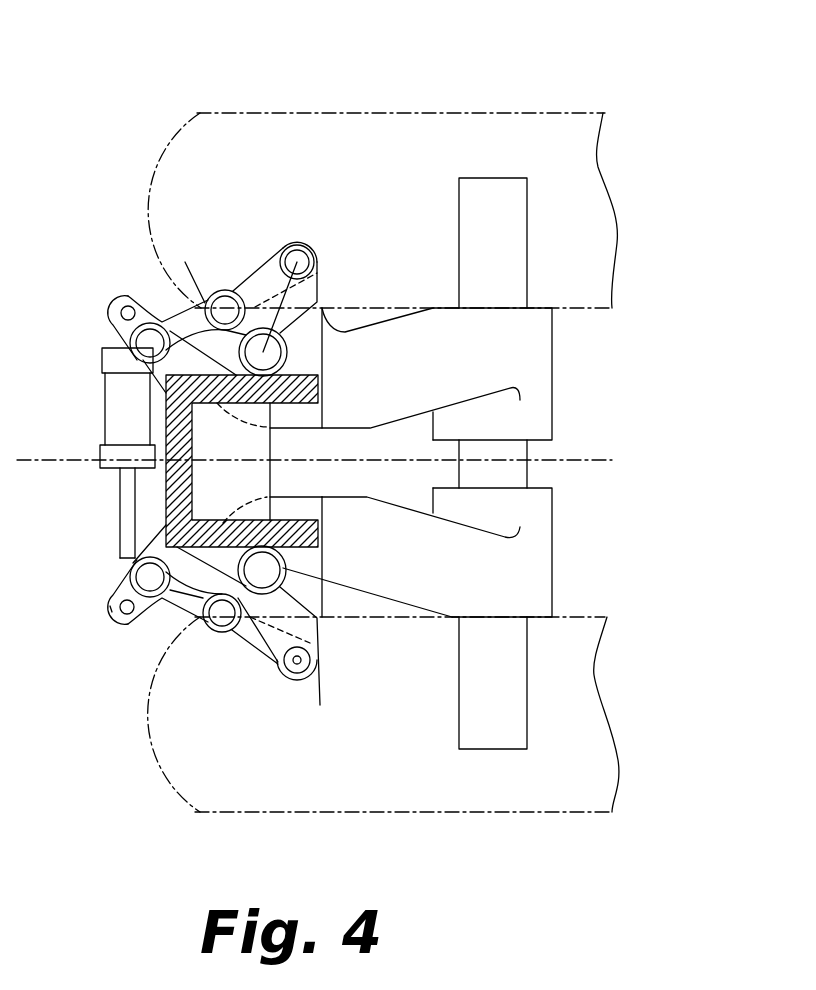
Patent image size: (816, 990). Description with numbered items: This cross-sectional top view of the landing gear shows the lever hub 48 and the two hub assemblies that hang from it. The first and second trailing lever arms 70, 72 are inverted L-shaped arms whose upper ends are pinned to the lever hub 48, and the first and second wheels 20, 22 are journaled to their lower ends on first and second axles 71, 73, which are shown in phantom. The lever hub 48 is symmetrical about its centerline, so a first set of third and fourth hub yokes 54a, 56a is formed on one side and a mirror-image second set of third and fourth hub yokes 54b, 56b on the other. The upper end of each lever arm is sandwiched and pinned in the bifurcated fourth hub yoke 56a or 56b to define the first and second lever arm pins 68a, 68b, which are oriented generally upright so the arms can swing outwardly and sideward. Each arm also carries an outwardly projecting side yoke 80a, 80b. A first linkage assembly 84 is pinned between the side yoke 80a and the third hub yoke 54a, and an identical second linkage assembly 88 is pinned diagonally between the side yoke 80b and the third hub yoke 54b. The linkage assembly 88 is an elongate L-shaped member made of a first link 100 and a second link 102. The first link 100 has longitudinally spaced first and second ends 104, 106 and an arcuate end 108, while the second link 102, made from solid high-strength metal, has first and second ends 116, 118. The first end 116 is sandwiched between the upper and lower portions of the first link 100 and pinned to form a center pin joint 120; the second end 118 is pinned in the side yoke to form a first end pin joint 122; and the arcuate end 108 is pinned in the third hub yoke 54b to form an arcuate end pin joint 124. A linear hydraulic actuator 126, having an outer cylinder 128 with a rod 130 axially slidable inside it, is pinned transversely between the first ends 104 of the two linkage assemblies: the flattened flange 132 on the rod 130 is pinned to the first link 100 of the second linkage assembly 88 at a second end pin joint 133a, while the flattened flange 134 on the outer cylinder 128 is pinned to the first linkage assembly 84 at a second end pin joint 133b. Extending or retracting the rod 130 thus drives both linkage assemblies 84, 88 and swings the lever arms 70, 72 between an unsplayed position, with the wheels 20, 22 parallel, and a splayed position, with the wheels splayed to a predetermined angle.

The first wheel 20 is at (600, 167).
The second wheel 22 is at (618, 778).
The lever hub 48 is at (165, 497).
The third hub yoke 54a is at (128, 342).
The third hub yoke 54b is at (150, 557).
The fourth hub yoke 56a is at (257, 305).
The fourth hub yoke 56b is at (282, 590).
The first lever arm pin 68a is at (297, 262).
The second lever arm pin 68b is at (286, 576).
The first trailing lever arm 70 is at (553, 360).
The first axle 71 is at (491, 178).
The second trailing lever arm 72 is at (553, 558).
The second axle 73 is at (489, 750).
The side yoke 80a is at (322, 300).
The side yoke 80b is at (318, 705).
The first linkage assembly 84 is at (175, 308).
The second linkage assembly 88 is at (218, 638).
The first link 100 is at (158, 620).
The second link 102 is at (245, 640).
The first end 104 is at (107, 610).
The second end 106 is at (175, 627).
The arcuate end 108 is at (113, 592).
The first end 116 is at (222, 614).
The second end 118 is at (318, 660).
The center pin joint 120 is at (207, 650).
The first end pin joint 122 is at (296, 670).
The arcuate end pin joint 124 is at (133, 559).
The linear hydraulic actuator 126 is at (104, 423).
The outer cylinder 128 is at (110, 395).
The rod 130 is at (118, 497).
The flattened flange 132 is at (125, 617).
The second end pin joint 133a is at (124, 625).
The second end pin joint 133b is at (122, 300).
The flattened flange 134 is at (126, 311).